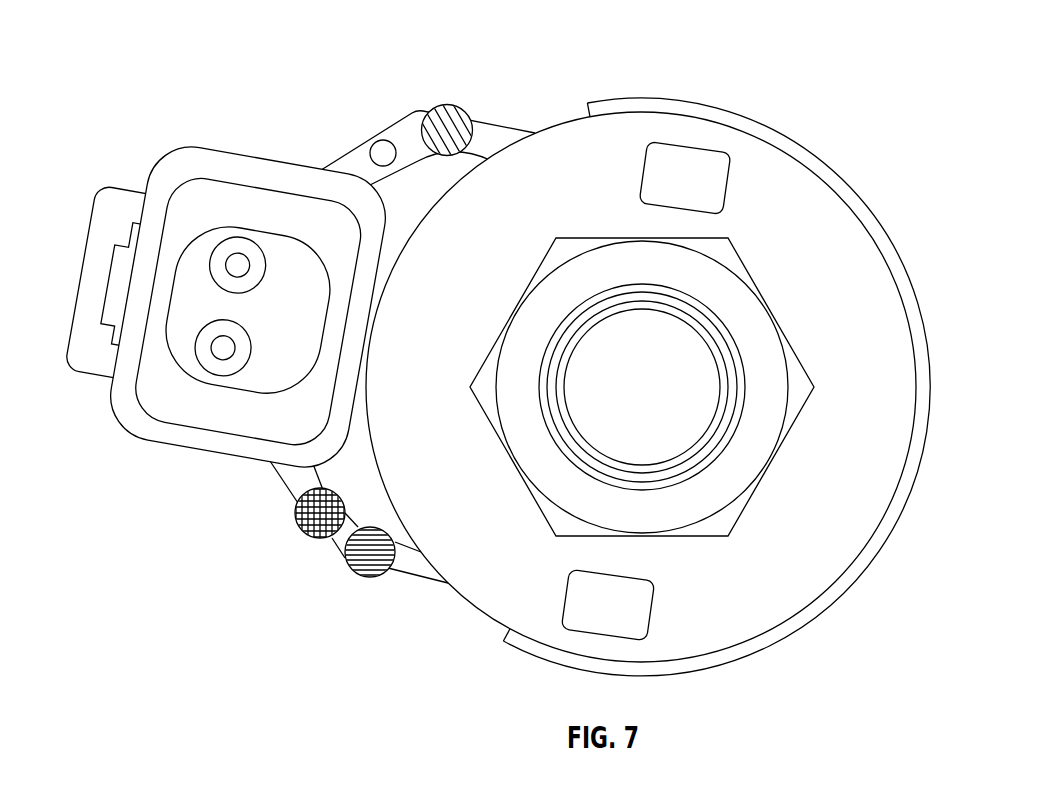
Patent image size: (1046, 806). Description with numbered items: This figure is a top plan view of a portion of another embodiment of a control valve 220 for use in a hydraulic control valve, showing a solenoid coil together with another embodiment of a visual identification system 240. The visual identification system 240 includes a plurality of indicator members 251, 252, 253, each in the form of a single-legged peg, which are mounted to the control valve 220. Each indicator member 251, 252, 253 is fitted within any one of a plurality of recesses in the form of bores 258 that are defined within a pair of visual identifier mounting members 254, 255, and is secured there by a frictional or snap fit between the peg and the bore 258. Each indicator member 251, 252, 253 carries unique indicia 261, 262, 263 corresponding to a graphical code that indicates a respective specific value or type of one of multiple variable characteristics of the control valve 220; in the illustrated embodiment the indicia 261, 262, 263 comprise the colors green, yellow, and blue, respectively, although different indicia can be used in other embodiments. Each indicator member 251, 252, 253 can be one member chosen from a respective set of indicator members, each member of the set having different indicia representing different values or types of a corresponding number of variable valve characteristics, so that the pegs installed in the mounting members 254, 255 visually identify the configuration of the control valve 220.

The control valve 220 is at (492, 344).
The visual identification system 240 is at (304, 340).
The indicator member 251 is at (434, 91).
The indicator member 252 is at (276, 523).
The indicator member 253 is at (348, 596).
The visual identifier mounting member 254 is at (489, 136).
The visual identifier mounting member 255 is at (412, 563).
The bore 258 is at (383, 152).
The indicia 261 is at (435, 120).
The indicia 262 is at (303, 500).
The indicia 263 is at (375, 565).